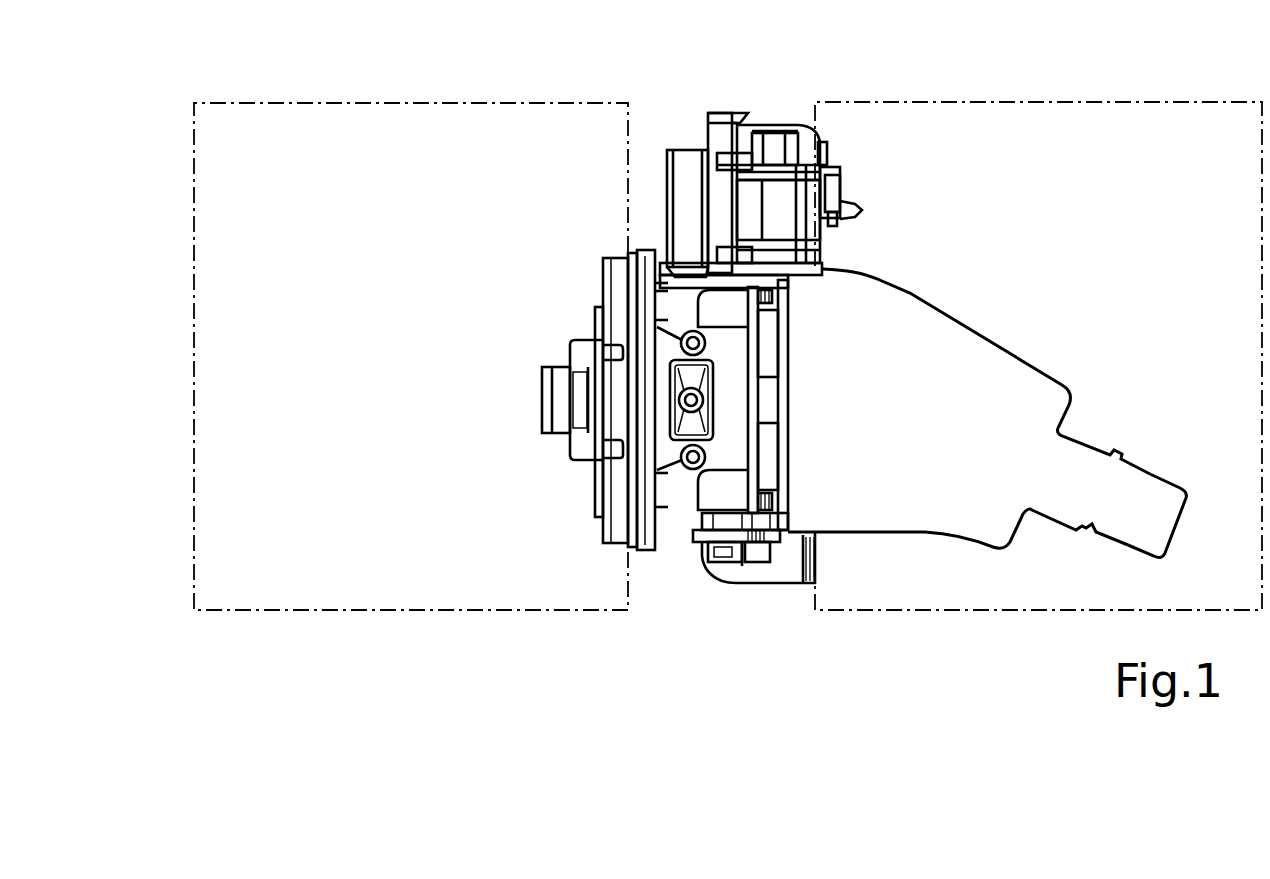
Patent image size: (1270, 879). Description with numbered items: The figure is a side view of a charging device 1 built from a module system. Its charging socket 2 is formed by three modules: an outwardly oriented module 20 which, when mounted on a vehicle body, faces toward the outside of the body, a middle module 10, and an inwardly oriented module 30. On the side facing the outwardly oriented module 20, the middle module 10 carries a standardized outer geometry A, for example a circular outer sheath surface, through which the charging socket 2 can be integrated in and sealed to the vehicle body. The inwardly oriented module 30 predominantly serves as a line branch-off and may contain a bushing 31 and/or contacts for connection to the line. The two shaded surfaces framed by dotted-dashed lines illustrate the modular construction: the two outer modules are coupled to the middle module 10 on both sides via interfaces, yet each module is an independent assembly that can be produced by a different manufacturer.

The charging device 1 is at (728, 355).
The charging socket 2 is at (761, 165).
The middle module 10 is at (694, 561).
The outwardly oriented module 20 is at (580, 522).
The inwardly oriented module 30 is at (965, 550).
The bushing 31 is at (1148, 484).
The standardized outer geometry A is at (645, 237).